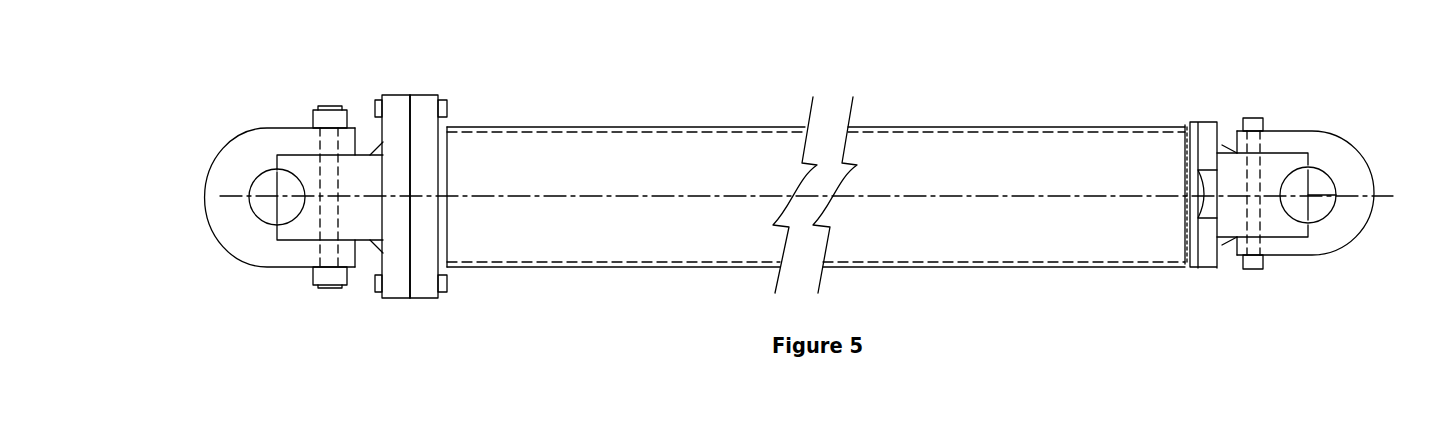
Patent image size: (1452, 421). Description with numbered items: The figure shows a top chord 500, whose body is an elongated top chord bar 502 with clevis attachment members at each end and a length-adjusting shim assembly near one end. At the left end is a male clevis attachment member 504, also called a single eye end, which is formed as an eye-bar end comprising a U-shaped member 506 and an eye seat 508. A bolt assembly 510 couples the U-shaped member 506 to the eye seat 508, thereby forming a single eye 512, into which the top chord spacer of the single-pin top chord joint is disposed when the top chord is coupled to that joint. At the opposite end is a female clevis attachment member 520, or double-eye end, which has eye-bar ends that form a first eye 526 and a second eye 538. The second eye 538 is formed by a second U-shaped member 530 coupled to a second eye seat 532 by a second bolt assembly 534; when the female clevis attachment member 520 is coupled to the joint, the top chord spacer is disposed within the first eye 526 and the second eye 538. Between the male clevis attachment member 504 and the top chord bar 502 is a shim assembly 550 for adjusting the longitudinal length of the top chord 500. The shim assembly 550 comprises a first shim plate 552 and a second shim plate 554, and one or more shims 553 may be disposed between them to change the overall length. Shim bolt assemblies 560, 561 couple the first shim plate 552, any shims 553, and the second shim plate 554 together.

The top chord 500 is at (503, 92).
The top chord bar 502 is at (622, 127).
The male clevis attachment member 504 is at (285, 112).
The U-shaped member 506 is at (222, 154).
The eye seat 508 is at (300, 228).
The bolt assembly 510 is at (331, 287).
The single eye 512 is at (266, 210).
The female clevis attachment member 520 is at (1294, 117).
The first eye 526 is at (1324, 196).
The second U-shaped member 530 is at (1360, 168).
The second eye seat 532 is at (1280, 163).
The second bolt assembly 534 is at (1252, 117).
The second eye 538 is at (1316, 209).
The shim assembly 550 is at (410, 86).
The first shim plate 552 is at (395, 300).
The shim 553 is at (410, 300).
The second shim plate 554 is at (427, 300).
The shim bolt assembly 560 is at (448, 285).
The shim bolt assembly 561 is at (448, 108).